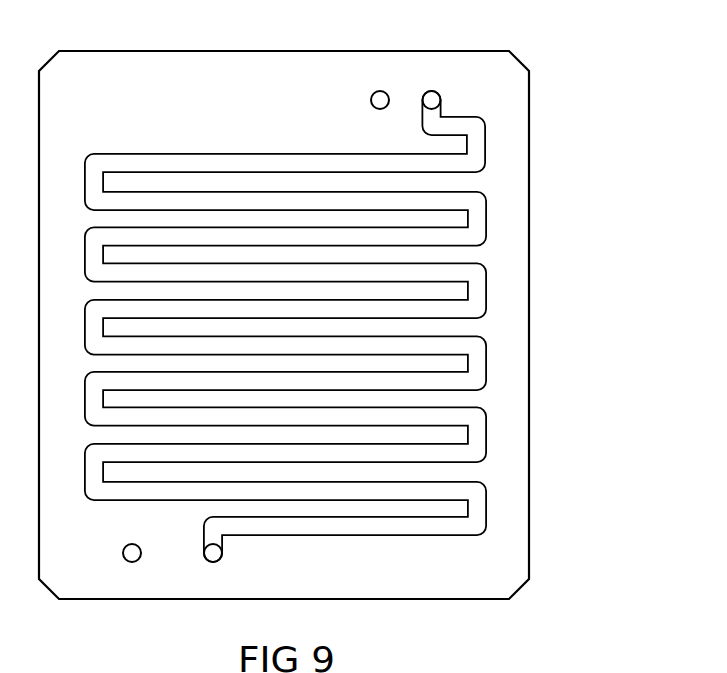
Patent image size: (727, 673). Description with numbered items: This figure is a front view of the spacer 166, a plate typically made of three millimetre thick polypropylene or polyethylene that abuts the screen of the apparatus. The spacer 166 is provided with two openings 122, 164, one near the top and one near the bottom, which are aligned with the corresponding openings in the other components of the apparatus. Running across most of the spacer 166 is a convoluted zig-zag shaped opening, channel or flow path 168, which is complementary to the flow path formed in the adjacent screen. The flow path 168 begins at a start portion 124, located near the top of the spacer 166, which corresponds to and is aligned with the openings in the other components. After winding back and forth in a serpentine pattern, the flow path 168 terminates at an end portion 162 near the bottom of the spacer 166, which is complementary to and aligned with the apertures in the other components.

The opening 122 is at (380, 96).
The start portion 124 is at (429, 98).
The end portion 162 is at (214, 562).
The opening 164 is at (132, 560).
The spacer 166 is at (367, 572).
The convoluted zig-zag shaped opening 168 is at (477, 288).